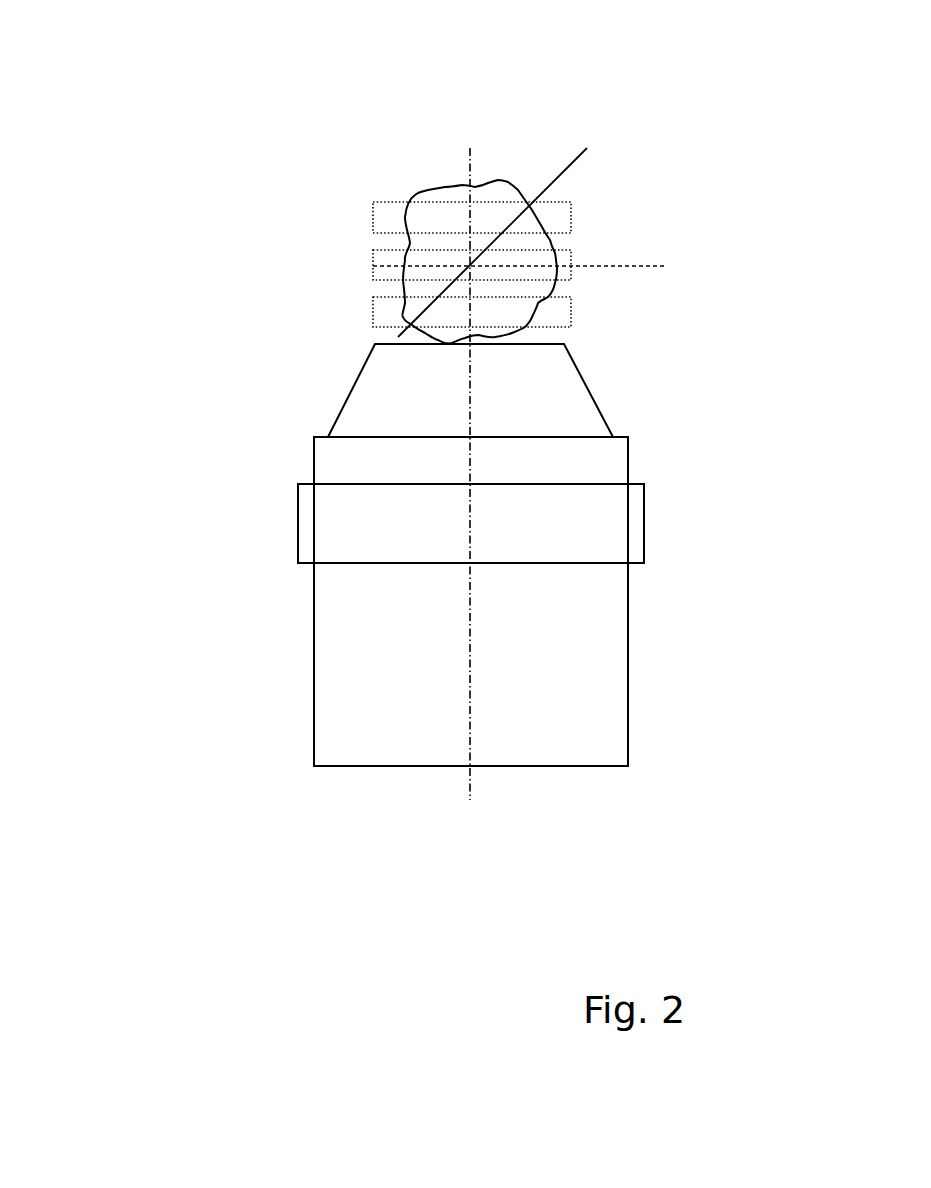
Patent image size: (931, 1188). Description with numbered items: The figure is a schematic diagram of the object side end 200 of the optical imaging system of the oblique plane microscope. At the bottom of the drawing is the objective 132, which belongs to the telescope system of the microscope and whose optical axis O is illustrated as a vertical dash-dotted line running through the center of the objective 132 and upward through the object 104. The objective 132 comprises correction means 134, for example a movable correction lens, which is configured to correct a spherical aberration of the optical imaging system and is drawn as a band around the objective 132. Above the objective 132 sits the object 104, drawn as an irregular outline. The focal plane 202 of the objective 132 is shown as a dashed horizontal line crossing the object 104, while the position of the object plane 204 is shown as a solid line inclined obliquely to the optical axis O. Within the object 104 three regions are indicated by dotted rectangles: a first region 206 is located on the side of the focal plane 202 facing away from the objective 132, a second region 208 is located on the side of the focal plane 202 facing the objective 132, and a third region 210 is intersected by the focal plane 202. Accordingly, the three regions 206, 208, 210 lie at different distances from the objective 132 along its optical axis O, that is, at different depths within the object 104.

The object side end 200 is at (148, 68).
The object 104 is at (505, 178).
The object plane 204 is at (567, 175).
The focal plane 202 is at (632, 267).
The first region 206 is at (373, 220).
The third region 210 is at (372, 265).
The second region 208 is at (373, 312).
The correction means 134 is at (644, 529).
The objective 132 is at (632, 702).
The optical axis O is at (473, 712).